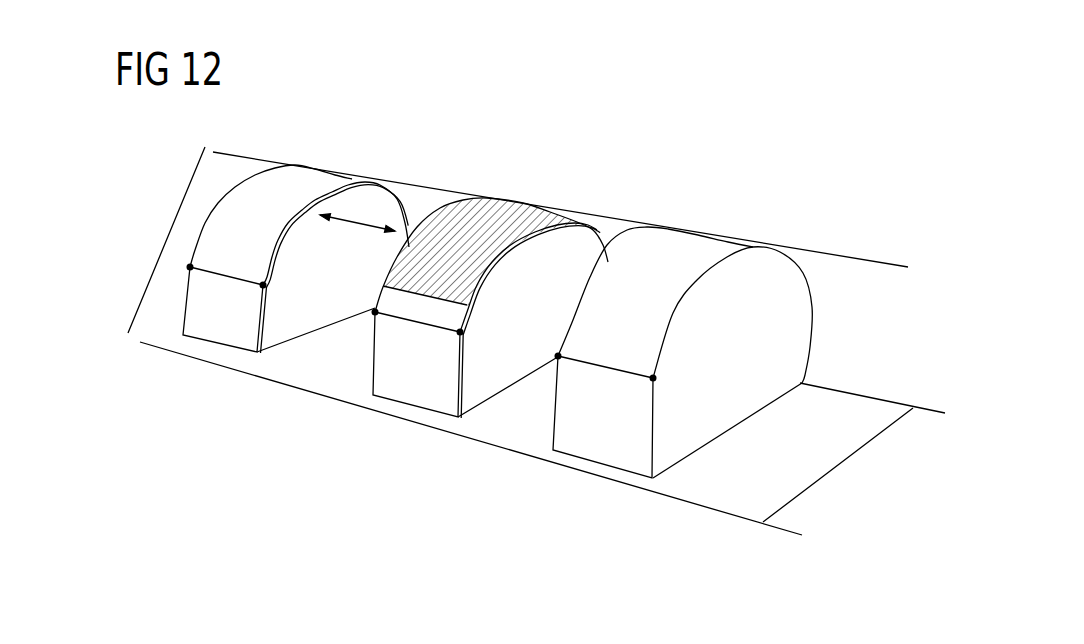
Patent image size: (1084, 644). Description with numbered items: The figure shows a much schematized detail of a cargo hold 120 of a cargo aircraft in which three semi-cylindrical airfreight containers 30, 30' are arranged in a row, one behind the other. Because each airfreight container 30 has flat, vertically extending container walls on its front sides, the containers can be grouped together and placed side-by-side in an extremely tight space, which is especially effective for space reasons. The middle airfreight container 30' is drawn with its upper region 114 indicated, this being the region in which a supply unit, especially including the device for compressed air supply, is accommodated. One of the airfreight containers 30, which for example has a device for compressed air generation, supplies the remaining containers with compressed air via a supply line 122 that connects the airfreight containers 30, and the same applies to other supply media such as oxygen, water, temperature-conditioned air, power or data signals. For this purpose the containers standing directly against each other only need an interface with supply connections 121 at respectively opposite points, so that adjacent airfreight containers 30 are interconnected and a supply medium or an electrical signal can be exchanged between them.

The airfreight container 30 is at (501, 283).
The shaped body with curved surface region 30' is at (491, 265).
The upper region 114 is at (533, 265).
The cargo hold 120 is at (167, 240).
The supply connections 121 is at (260, 288).
The supply line 122 is at (228, 272).